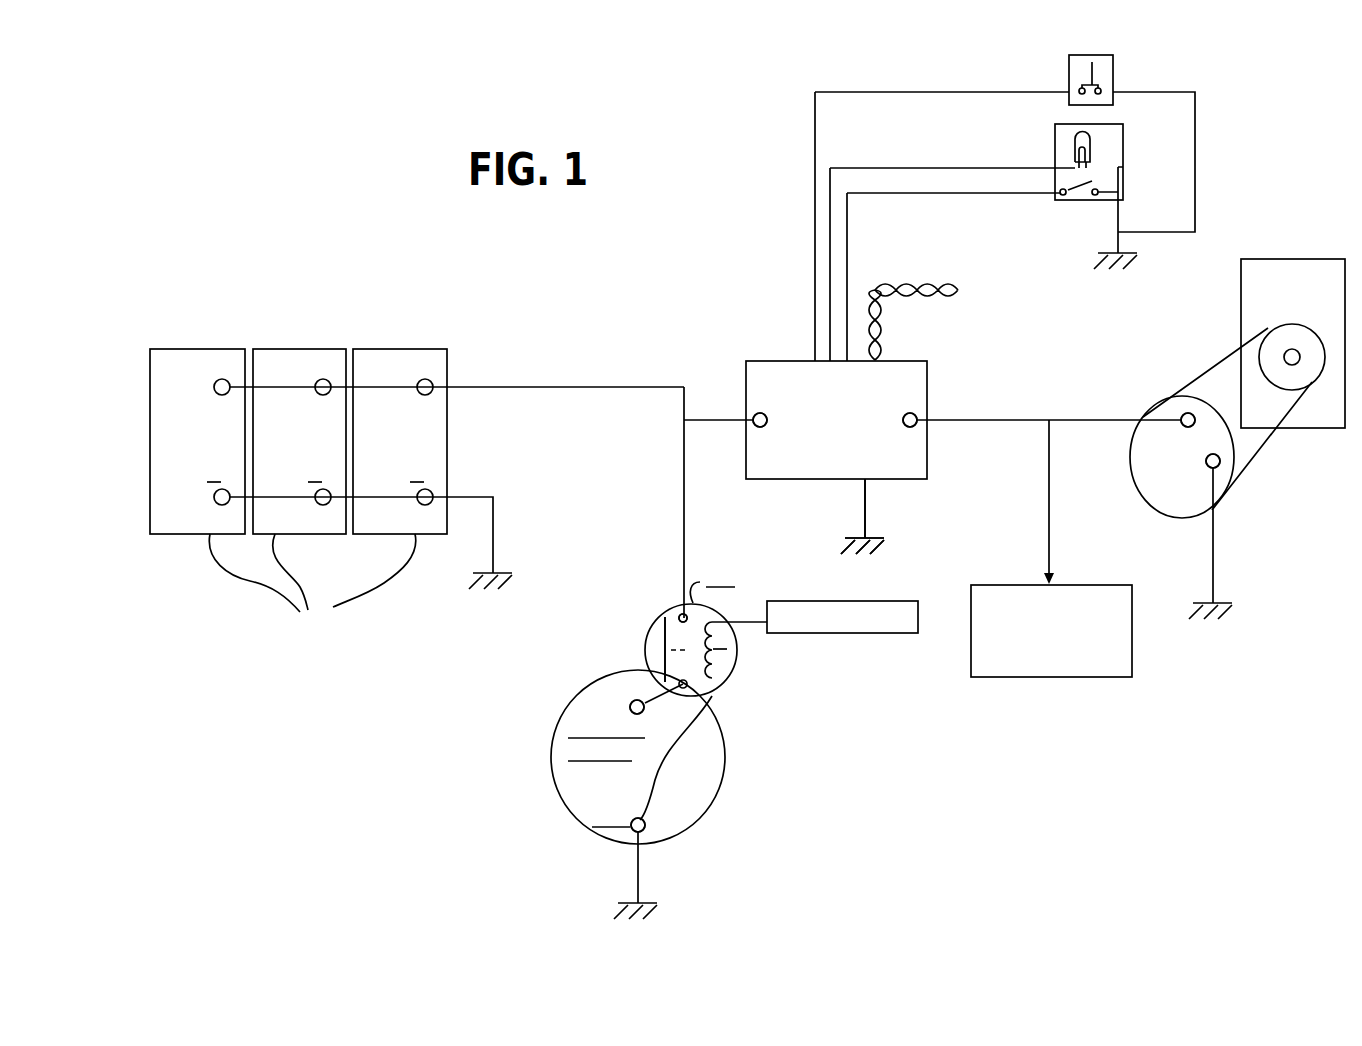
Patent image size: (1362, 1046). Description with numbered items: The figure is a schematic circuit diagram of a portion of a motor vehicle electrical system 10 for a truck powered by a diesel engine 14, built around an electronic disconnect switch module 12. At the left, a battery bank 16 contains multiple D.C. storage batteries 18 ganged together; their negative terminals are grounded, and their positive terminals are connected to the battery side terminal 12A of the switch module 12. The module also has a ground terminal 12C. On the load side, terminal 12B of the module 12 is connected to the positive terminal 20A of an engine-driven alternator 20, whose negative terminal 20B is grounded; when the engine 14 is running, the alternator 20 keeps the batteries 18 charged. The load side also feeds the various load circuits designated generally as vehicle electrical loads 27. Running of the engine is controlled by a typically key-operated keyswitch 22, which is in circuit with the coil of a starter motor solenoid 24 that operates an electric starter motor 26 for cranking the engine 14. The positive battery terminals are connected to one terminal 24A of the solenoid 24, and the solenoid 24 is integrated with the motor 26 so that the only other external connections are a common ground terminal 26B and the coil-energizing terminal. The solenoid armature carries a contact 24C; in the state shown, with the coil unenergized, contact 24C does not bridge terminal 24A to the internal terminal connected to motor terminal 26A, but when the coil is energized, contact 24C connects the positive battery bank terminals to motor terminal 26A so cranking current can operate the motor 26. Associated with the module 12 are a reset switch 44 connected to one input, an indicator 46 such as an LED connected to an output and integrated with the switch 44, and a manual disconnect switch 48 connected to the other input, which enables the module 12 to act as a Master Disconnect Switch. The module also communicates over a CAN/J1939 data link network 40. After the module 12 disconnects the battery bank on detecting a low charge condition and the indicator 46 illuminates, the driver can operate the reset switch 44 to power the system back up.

The motor vehicle electrical system 10 is at (866, 714).
The electronic disconnect switch module 12 is at (745, 369).
The battery side terminal 12A is at (757, 428).
The load side terminal 12B is at (918, 416).
The ground terminal of disconnect switch 12C is at (872, 500).
The diesel engine 14 is at (1293, 343).
The battery bank 16 is at (412, 351).
The D.C. storage batteries 18 is at (312, 579).
The alternator 20 is at (1150, 411).
The positive alternator terminal 20A is at (1192, 413).
The negative alternator terminal 20B is at (1220, 464).
The keyswitch 22 is at (918, 634).
The starter motor solenoid 24 is at (652, 640).
The solenoid terminal 24A is at (681, 612).
The contact 24C is at (661, 606).
The electric starter motor 26 is at (595, 785).
The motor terminal 26A is at (630, 707).
The common ground terminal 26B is at (645, 822).
The vehicle electrical loads 27 is at (1060, 678).
The CAN/J1939 network 40 is at (903, 292).
The reset switch 44 is at (1080, 196).
The indicator 46 is at (1077, 148).
The manual disconnect switch 48 is at (1088, 71).